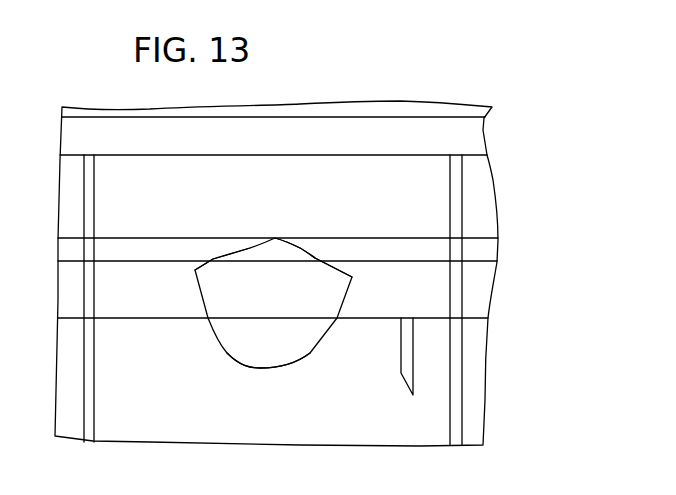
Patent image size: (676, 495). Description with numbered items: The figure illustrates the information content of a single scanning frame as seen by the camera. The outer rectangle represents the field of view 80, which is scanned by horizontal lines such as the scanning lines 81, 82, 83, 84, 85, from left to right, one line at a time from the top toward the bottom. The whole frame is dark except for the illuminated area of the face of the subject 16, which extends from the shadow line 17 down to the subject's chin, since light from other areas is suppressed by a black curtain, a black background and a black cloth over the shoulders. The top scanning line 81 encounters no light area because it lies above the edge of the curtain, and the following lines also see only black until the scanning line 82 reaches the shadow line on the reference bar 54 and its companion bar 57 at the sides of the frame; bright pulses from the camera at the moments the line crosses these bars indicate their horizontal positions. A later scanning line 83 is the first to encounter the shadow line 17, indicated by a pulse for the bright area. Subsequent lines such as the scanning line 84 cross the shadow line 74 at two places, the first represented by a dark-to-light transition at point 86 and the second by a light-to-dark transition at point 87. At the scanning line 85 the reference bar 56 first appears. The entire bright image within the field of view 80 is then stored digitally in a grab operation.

The field of view 80 is at (483, 128).
The top scanning line 81 is at (329, 116).
The scanning line 82 is at (347, 155).
The scanning line 83 is at (192, 237).
The scanning line 84 is at (157, 263).
The scanning line 85 is at (193, 320).
The reference bar 54 is at (88, 406).
The right vertical strip 57 is at (457, 413).
The reference bar 56 is at (405, 377).
The shadow line 74 is at (345, 300).
The shadow line 17 is at (300, 248).
The subject 16 is at (270, 360).
The point 86 is at (213, 259).
The point 87 is at (312, 262).